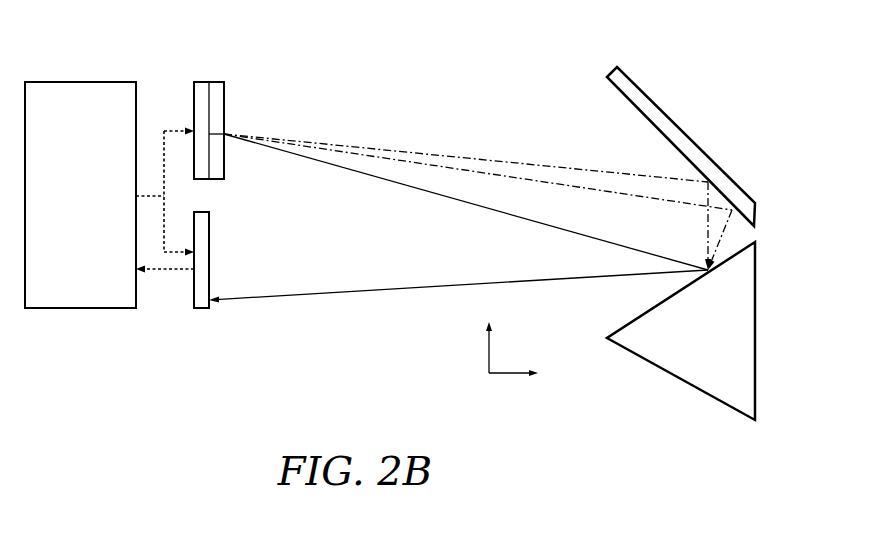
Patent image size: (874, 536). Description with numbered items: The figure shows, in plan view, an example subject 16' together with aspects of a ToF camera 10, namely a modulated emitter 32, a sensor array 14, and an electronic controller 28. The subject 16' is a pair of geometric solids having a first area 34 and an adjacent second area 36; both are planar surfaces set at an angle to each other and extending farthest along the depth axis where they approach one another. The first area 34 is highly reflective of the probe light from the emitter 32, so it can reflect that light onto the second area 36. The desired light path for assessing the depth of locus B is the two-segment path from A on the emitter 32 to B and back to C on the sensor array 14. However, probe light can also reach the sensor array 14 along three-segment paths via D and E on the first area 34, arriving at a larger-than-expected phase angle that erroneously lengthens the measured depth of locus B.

The camera 10 is at (106, 356).
The electronic controller 28 is at (80, 195).
The modulated emitter 32 is at (211, 64).
The sensor array 14 is at (209, 229).
The first area 34 is at (620, 93).
The second area 36 is at (635, 318).
The subject 16' is at (470, 185).